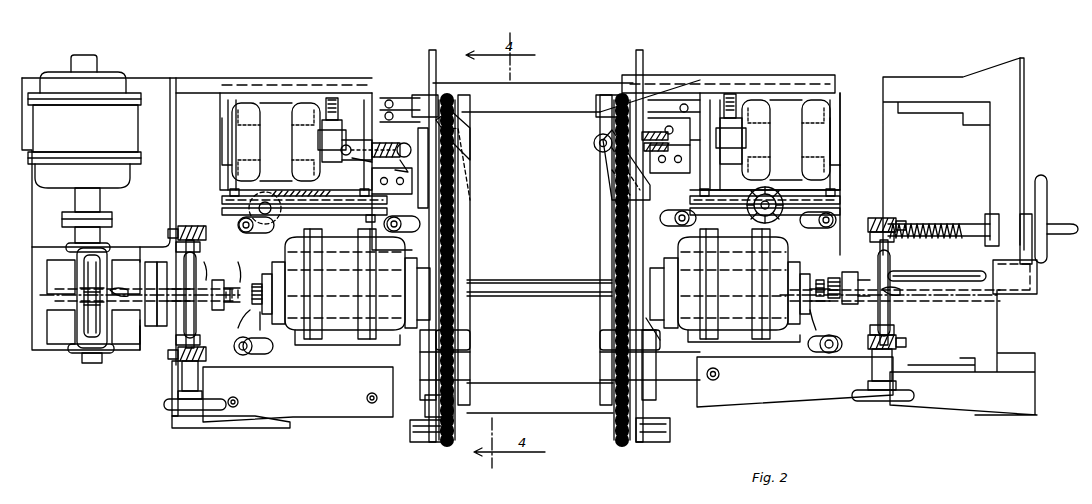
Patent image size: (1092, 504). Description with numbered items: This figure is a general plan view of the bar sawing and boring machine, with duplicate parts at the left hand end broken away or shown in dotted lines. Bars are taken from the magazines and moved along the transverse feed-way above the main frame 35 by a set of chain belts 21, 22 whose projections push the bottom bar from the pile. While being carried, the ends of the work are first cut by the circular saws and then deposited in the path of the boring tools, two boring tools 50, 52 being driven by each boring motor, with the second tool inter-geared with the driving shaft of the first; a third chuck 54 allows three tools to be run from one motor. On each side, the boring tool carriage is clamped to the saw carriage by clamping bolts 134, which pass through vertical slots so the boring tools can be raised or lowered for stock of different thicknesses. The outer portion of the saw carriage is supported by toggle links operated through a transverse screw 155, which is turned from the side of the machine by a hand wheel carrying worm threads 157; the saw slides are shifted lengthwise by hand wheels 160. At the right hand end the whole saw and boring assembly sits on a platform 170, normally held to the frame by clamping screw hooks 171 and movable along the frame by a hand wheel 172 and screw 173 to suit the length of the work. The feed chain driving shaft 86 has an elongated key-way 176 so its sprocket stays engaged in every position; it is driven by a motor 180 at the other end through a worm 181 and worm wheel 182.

The chain belt 21 is at (450, 425).
The chain belt 22 is at (634, 424).
The main frame 35 is at (724, 236).
The boring tool 50 is at (660, 120).
The boring tool 52 is at (644, 130).
The third chuck 54 is at (685, 100).
The feed chain driving shaft 86 is at (510, 279).
The clamping bolt 134 is at (835, 190).
The transverse screw 155 is at (882, 366).
The worm threads 157 is at (900, 332).
The hand wheel 160 is at (890, 258).
The platform 170 is at (795, 382).
The clamping screw hook 171 is at (715, 380).
The hand wheel 172 is at (1044, 253).
The screw 173 is at (978, 222).
The elongated key-way 176 is at (550, 290).
The motor 180 is at (84, 149).
The worm 181 is at (80, 318).
The worm wheel 182 is at (105, 262).